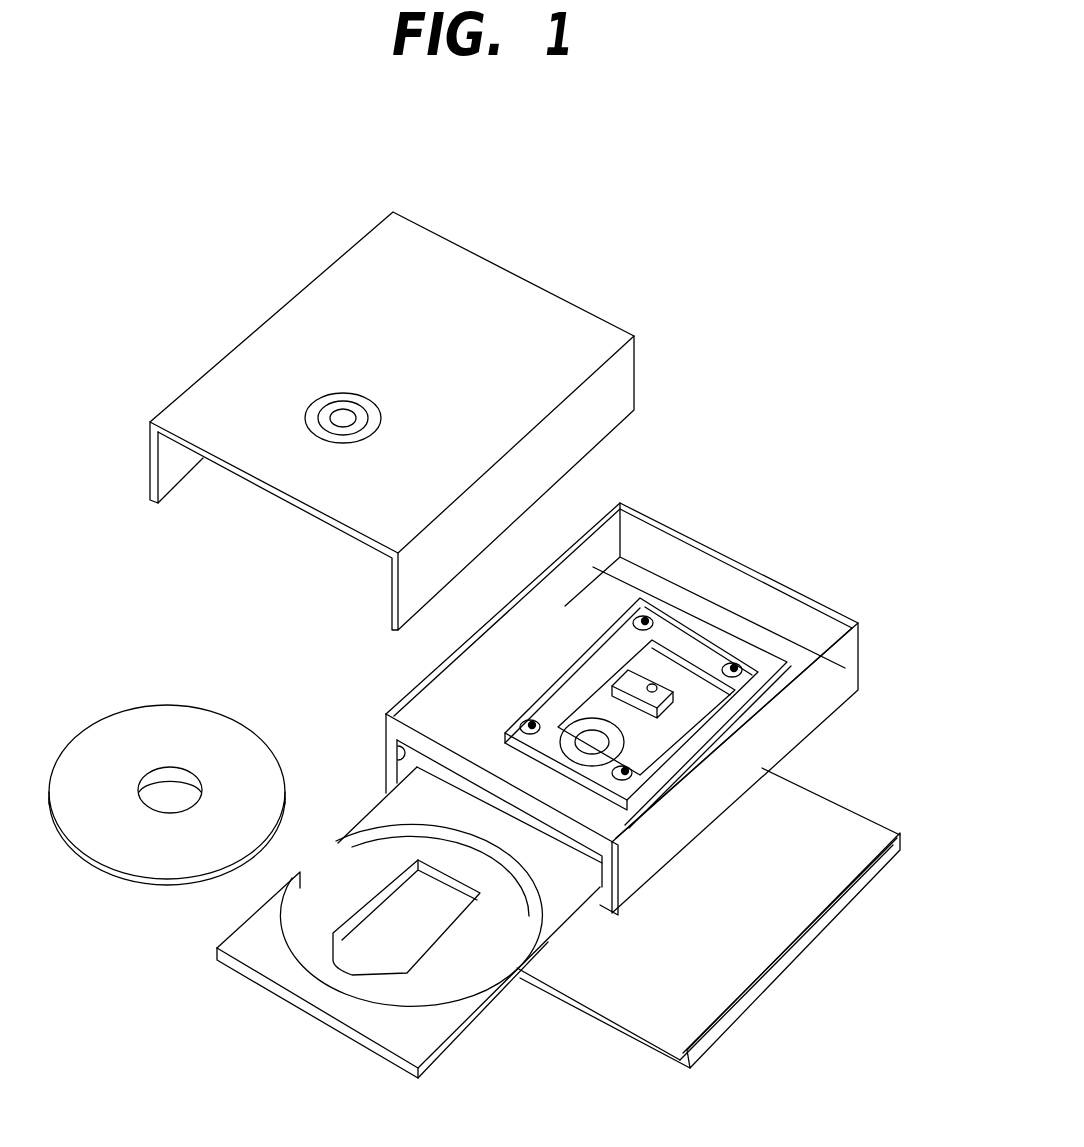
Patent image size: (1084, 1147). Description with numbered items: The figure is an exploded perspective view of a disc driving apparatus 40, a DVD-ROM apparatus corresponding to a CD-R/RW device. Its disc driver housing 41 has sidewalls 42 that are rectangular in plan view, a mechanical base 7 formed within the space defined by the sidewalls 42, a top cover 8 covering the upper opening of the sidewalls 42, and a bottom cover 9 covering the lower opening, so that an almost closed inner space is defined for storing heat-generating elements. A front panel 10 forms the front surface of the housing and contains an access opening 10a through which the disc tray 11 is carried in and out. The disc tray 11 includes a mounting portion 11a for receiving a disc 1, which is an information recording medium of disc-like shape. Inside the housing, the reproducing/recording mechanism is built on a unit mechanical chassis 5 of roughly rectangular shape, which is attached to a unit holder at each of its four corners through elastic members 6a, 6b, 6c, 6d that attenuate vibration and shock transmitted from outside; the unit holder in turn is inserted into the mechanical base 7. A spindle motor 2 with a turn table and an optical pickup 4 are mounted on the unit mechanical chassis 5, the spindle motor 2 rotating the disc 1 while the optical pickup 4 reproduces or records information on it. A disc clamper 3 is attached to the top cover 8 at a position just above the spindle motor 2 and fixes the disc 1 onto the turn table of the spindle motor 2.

The disc 1 is at (160, 726).
The spindle motor 2 is at (580, 762).
The disc clamper 3 is at (330, 406).
The optical pickup 4 is at (660, 672).
The unit mechanical chassis 5 is at (722, 690).
The elastic member 6a is at (630, 774).
The elastic member 6b is at (525, 722).
The elastic member 6c is at (643, 620).
The elastic member 6d is at (740, 672).
The mechanical base 7 is at (706, 613).
The top cover 8 is at (520, 283).
The bottom cover 9 is at (780, 945).
The front panel 10 is at (458, 839).
The access opening 10a is at (398, 752).
The disc tray 11 is at (379, 932).
The mounting portion 11a is at (338, 975).
The disc driving apparatus 40 is at (803, 338).
The disc driver housing 41 is at (664, 664).
The sidewalls 42 is at (872, 660).